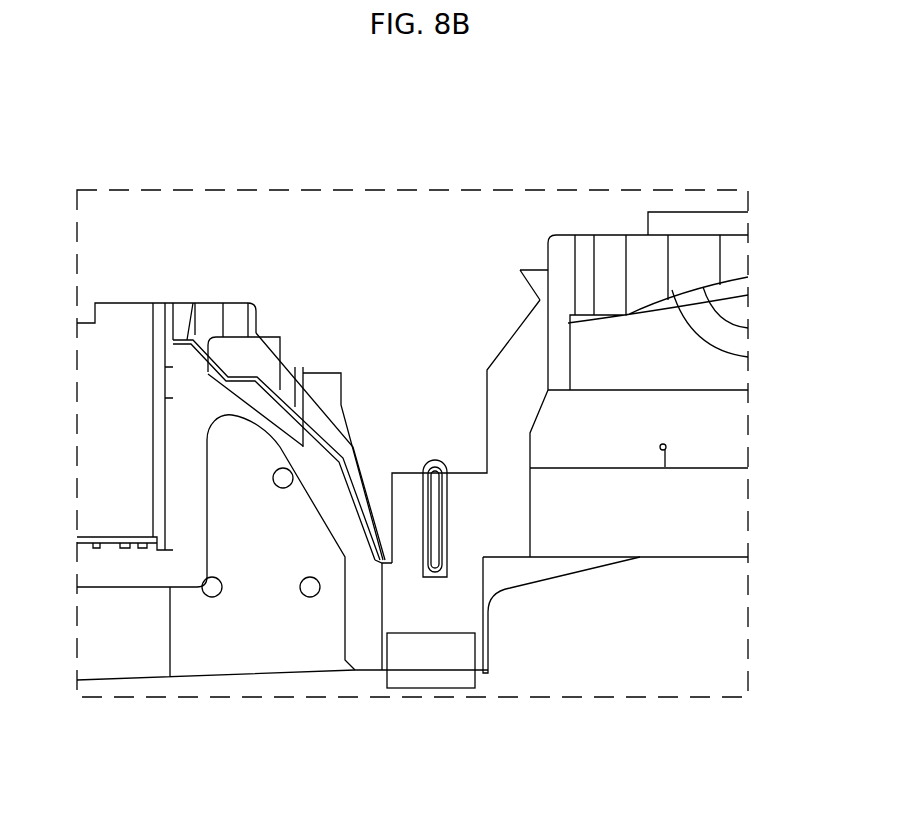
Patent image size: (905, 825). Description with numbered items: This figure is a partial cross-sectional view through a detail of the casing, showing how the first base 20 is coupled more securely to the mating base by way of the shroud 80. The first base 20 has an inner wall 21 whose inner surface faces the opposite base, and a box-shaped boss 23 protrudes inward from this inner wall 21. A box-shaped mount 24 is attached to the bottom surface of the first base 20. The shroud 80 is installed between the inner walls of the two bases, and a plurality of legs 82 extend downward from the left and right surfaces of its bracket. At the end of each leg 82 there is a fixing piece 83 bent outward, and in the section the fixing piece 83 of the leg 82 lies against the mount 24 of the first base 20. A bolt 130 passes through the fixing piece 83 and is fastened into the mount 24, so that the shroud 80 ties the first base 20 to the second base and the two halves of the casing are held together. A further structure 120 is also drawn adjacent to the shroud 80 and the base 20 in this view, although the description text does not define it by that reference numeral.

The first base 20 is at (172, 463).
The inner wall 21 is at (242, 607).
The boss 23 is at (520, 580).
The mount 24 is at (435, 608).
The shroud 80 is at (580, 322).
The leg 82 is at (512, 362).
The fixing piece 83 is at (402, 510).
The frame portion 120 is at (703, 513).
The bolt 130 is at (431, 443).